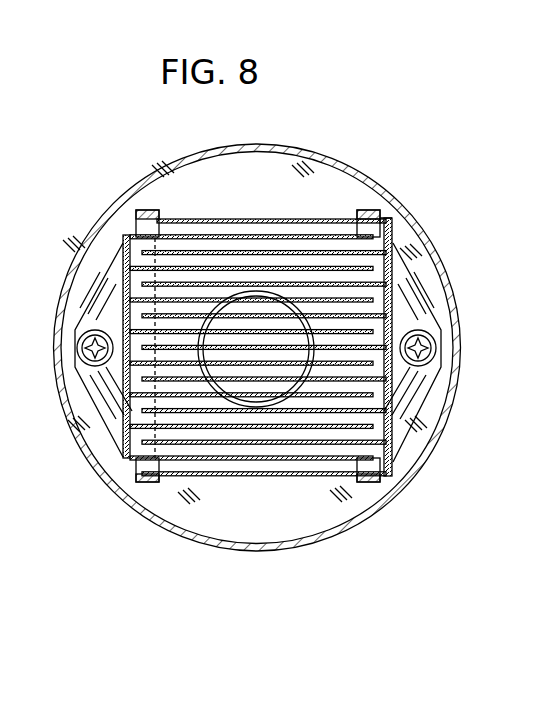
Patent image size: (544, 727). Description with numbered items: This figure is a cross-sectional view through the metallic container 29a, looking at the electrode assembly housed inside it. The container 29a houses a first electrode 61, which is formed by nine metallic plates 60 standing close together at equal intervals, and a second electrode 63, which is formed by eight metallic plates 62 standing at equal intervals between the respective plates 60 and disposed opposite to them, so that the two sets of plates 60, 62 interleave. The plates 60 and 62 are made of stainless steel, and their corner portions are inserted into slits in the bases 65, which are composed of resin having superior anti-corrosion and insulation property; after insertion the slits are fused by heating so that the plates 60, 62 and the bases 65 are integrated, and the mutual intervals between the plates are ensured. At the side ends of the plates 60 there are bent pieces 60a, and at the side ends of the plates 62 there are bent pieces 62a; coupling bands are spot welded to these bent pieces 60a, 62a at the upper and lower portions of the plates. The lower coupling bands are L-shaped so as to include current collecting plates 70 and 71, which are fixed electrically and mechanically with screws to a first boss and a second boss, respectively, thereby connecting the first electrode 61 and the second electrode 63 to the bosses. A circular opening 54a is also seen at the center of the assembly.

The metallic container 29a is at (458, 320).
The metallic plates 60 is at (318, 219).
The metallic plates 62 is at (233, 235).
The bent pieces 62a is at (128, 236).
The bent pieces 60a is at (381, 213).
The bases 65 is at (141, 482).
The second electrode 63 is at (118, 278).
The first electrode 61 is at (396, 266).
The current collecting plate 71 is at (116, 440).
The current collecting plate 70 is at (412, 410).
The circular opening 54a is at (278, 406).